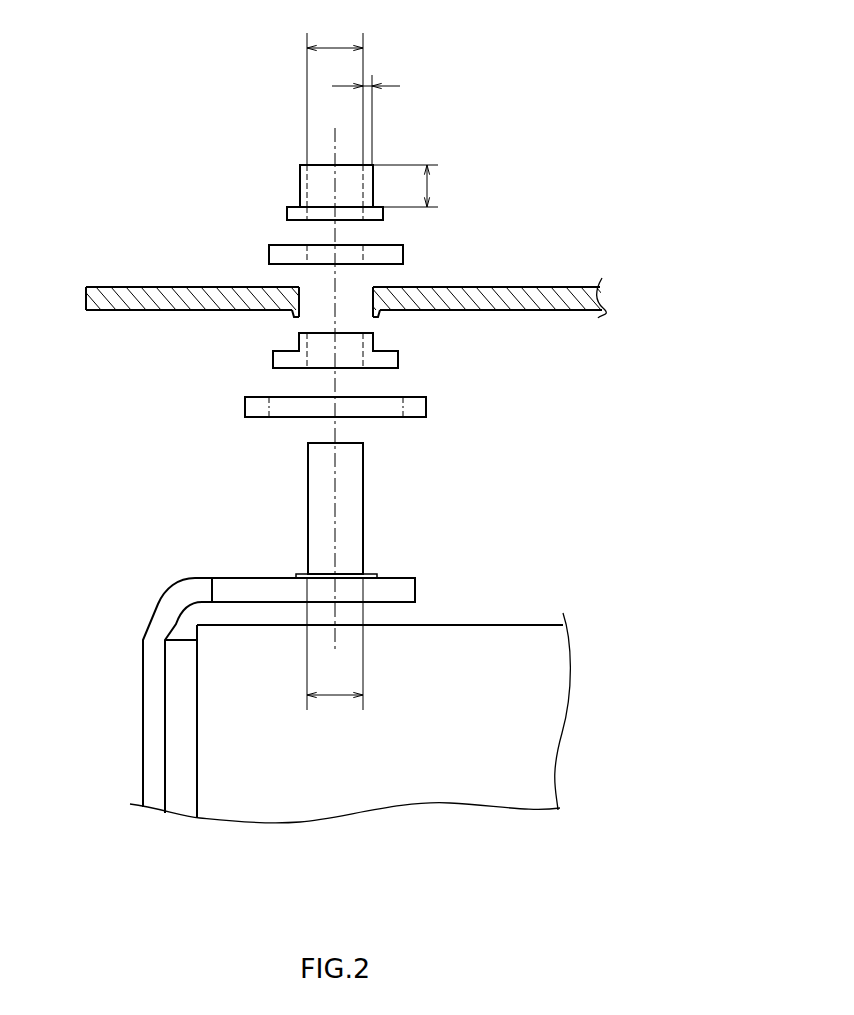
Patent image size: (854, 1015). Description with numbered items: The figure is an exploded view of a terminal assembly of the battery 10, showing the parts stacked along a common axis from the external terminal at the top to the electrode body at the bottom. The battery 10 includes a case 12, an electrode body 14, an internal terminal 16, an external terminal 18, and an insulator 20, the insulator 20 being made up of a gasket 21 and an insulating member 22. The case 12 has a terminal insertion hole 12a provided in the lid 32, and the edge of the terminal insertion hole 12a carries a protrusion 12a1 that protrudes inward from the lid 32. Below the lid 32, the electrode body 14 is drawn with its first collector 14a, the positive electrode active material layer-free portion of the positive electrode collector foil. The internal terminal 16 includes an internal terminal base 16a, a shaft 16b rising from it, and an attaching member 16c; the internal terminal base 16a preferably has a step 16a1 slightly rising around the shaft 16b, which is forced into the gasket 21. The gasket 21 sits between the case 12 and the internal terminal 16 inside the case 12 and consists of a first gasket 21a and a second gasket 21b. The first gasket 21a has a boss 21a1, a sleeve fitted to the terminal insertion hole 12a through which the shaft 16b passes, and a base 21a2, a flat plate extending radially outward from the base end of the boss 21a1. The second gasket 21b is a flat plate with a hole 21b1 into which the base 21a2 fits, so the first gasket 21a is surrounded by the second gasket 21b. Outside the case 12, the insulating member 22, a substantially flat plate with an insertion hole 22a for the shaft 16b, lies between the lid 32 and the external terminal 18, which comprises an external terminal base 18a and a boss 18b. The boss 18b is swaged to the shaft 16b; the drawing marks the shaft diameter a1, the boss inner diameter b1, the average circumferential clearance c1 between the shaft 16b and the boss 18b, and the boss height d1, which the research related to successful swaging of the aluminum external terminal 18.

The battery 10 is at (108, 110).
The case 12 is at (598, 257).
The terminal insertion hole 12a is at (307, 287).
The protrusion 12a1 is at (293, 315).
The lid 32 is at (540, 287).
The electrode body 14 is at (513, 750).
The first collector 14a is at (173, 775).
The internal terminal 16 is at (137, 592).
The internal terminal base 16a is at (405, 578).
The step 16a1 is at (298, 575).
The shaft 16b is at (363, 497).
The attaching member 16c is at (143, 693).
The external terminal 18 is at (390, 152).
The external terminal base 18a is at (297, 205).
The boss 18b is at (300, 170).
The insulator 20 is at (120, 408).
The gasket 21 is at (572, 393).
The first gasket 21a is at (403, 353).
The boss 21a1 is at (375, 336).
The base 21a2 is at (272, 362).
The second gasket 21b is at (430, 407).
The hole 21b1 is at (270, 412).
The insulating member 22 is at (420, 243).
The insertion hole 22a is at (312, 243).
The diameter a1 is at (335, 656).
The inner diameter b1 is at (335, 90).
The average circumferential clearance c1 is at (373, 111).
The height d1 is at (421, 186).